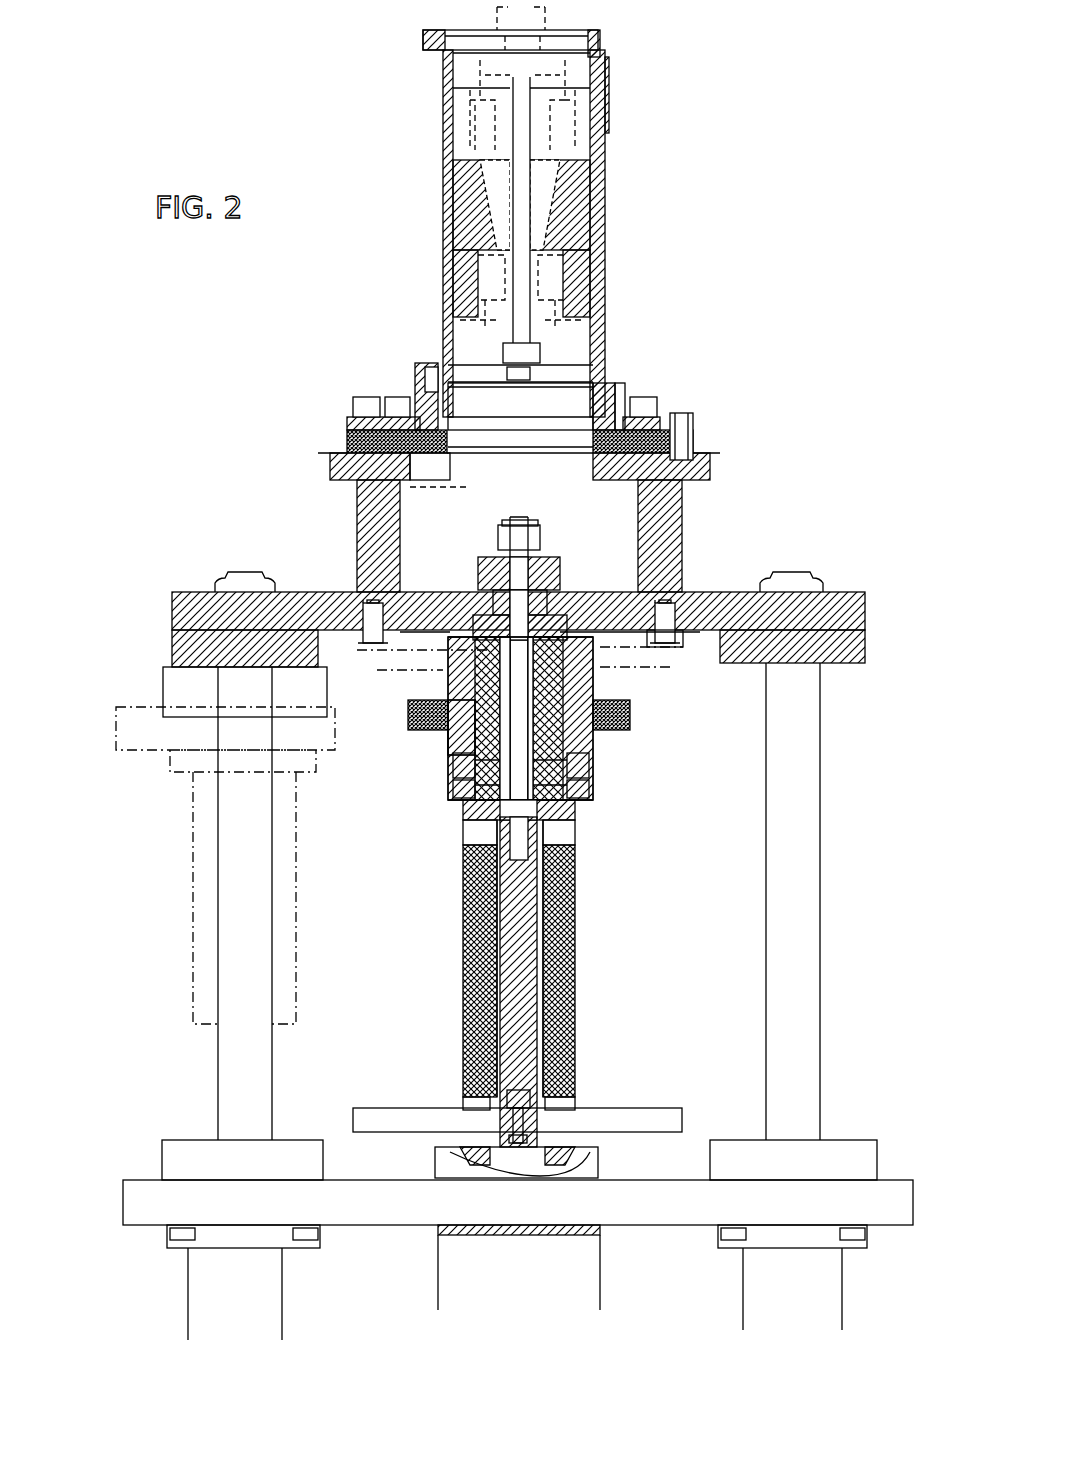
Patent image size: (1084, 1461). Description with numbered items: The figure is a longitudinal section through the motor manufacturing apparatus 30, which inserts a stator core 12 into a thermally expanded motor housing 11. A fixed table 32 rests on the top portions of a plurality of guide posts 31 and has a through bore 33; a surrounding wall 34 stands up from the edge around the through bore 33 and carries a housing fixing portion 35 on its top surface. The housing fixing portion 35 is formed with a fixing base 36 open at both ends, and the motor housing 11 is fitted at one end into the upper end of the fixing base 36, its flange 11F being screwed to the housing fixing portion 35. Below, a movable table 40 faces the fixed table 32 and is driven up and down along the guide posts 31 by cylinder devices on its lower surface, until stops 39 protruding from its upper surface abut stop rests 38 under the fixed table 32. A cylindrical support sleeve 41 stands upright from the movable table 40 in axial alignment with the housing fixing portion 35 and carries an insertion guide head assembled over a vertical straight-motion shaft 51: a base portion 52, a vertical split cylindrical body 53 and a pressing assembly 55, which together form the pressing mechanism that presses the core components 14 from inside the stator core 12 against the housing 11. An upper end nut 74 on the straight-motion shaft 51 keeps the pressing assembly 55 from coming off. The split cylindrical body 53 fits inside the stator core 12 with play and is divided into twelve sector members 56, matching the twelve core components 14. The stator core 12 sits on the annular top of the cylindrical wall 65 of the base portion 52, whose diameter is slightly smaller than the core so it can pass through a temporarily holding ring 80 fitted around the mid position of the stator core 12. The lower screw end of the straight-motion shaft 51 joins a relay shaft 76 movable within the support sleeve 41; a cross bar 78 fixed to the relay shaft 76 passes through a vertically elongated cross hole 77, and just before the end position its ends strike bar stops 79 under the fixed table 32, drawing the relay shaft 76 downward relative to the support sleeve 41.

The motor housing 11 is at (608, 97).
The flange 11F is at (416, 364).
The stator core 12 is at (446, 745).
The core components 14 is at (461, 727).
The motor manufacturing apparatus 30 is at (822, 248).
The guide posts 31 is at (218, 858).
The fixed table 32 is at (828, 592).
The through bore 33 is at (622, 593).
The surrounding wall 34 is at (683, 500).
The housing fixing portion 35 is at (704, 436).
The fixing base 36 is at (608, 384).
The stop rests 38 is at (172, 634).
The stops 39 is at (163, 692).
The movable table 40 is at (885, 1185).
The cylindrical support sleeve 41 is at (572, 990).
The straight-motion shaft 51 is at (577, 846).
The base portion 52 is at (576, 806).
The vertical split cylindrical body 53 is at (592, 728).
The pressing assembly 55 is at (566, 570).
The sector members 56 is at (520, 718).
The cylindrical wall 65 is at (590, 768).
The upper end nut 74 is at (540, 535).
The relay shaft 76 is at (540, 927).
The cross hole 77 is at (576, 1100).
The cross bar 78 is at (655, 697).
The bar stops 79 is at (683, 660).
The temporarily holding ring 80 is at (632, 718).